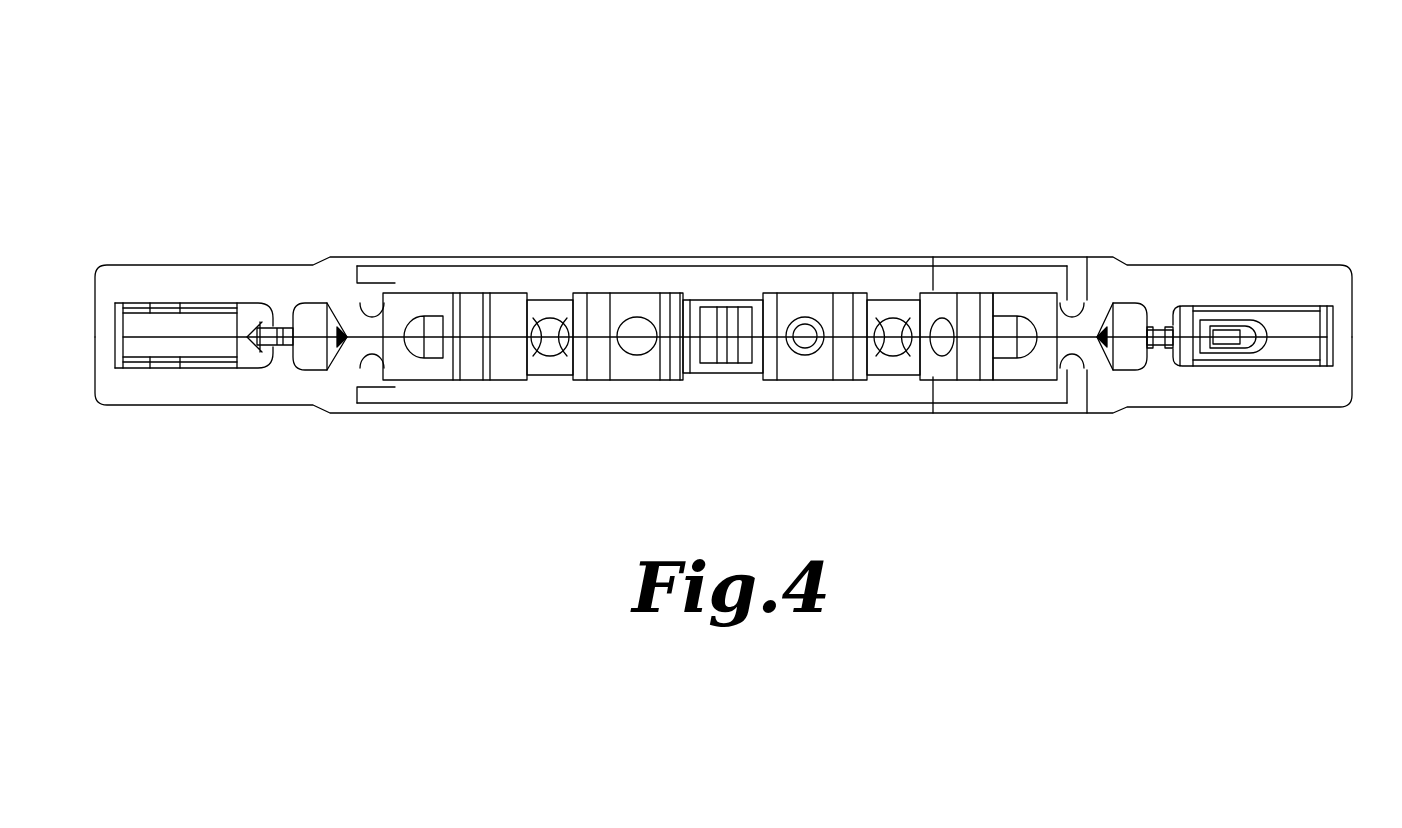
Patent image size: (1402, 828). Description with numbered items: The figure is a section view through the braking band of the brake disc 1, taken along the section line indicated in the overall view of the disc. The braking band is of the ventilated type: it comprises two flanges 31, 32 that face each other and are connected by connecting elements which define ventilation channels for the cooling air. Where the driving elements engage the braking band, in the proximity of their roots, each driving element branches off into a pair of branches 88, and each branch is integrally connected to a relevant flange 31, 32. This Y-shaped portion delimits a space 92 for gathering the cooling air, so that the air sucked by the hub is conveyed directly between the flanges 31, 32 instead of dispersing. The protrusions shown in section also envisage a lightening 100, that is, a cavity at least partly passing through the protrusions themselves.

The brake disc 1 is at (203, 162).
The flange 31 is at (1245, 385).
The flange 32 is at (1310, 283).
The branches 88 is at (1013, 303).
The space for gathering cooling air 92 is at (1204, 304).
The lightening 100 is at (803, 312).